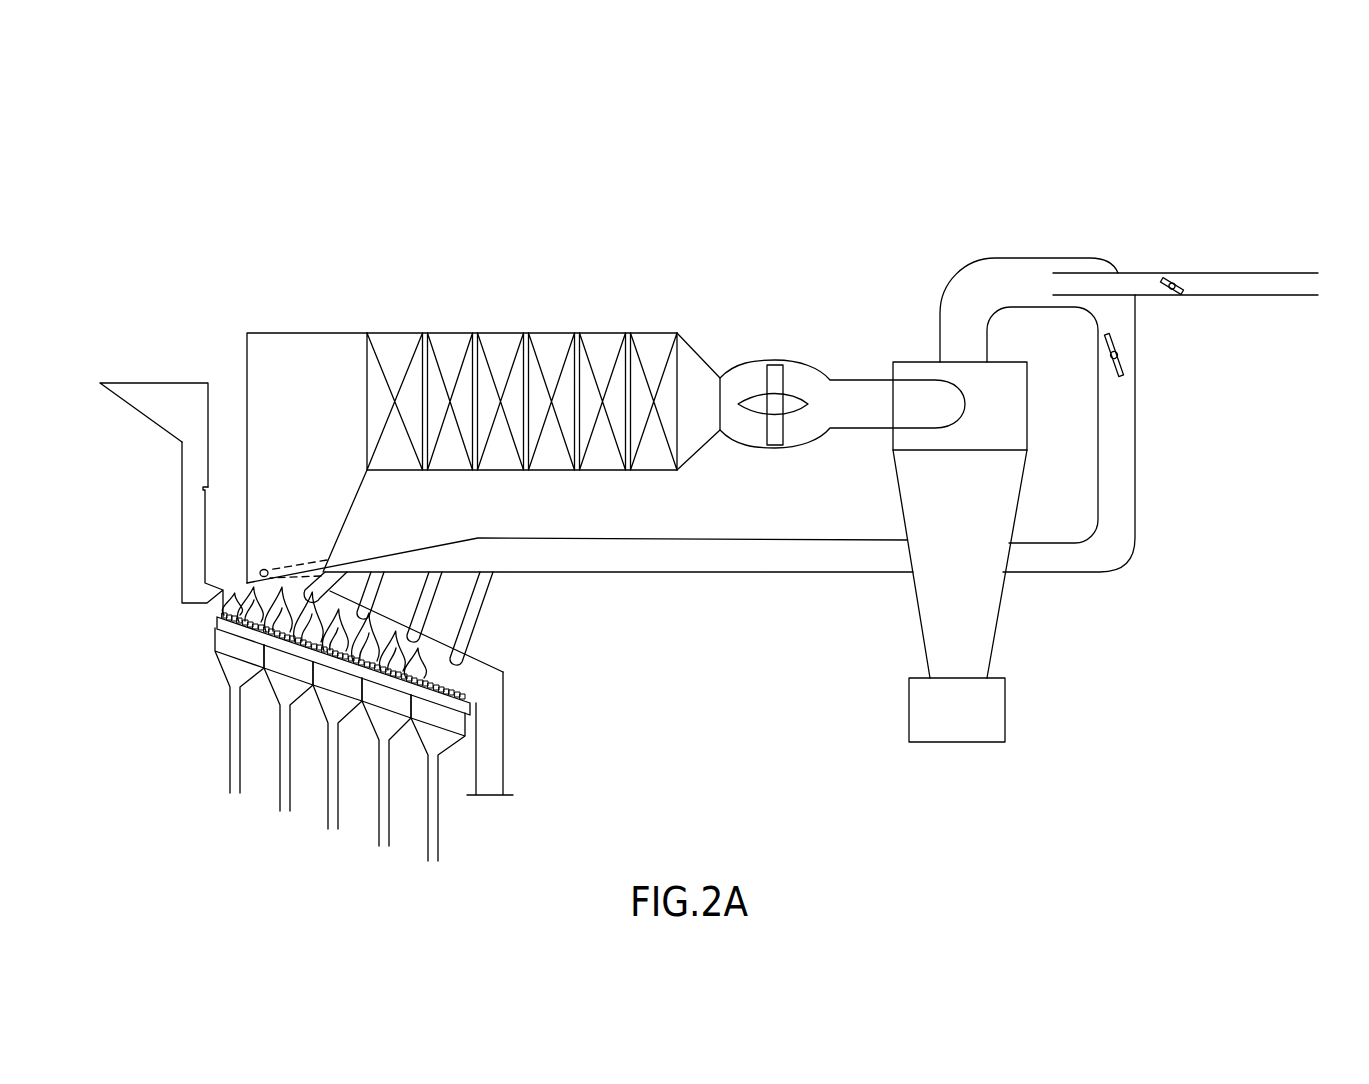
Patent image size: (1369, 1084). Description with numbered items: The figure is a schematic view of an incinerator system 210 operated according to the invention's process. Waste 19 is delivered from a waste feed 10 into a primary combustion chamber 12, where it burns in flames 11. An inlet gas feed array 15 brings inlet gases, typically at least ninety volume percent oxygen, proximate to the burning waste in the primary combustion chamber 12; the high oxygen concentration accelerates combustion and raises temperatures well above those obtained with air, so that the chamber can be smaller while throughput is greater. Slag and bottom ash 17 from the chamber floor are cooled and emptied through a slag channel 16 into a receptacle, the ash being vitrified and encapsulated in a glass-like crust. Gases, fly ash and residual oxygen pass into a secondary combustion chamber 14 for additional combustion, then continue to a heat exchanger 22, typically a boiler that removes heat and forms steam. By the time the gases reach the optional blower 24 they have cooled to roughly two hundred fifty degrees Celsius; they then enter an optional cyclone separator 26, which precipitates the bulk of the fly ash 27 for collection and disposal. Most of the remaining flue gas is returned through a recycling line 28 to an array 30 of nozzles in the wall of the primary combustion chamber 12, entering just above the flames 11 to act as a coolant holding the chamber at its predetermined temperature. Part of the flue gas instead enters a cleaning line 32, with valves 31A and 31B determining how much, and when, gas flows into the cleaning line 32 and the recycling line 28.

The incinerator system 210 is at (990, 137).
The waste feed 10 is at (148, 395).
The waste 19 is at (195, 560).
The primary combustion chamber 12 is at (247, 586).
The secondary combustion chamber 14 is at (304, 344).
The heat exchanger 22 is at (607, 333).
The blower 24 is at (812, 367).
The cyclone separator 26 is at (998, 605).
The fly ash 27 is at (1006, 712).
The recycling line 28 is at (1136, 440).
The cleaning line 32 is at (1280, 273).
The valve 31A is at (1123, 355).
The valve 31B is at (1168, 280).
The array of nozzles 30 is at (458, 602).
The flames 11 is at (480, 671).
The bottom ash 17 is at (466, 690).
The slag channel 16 is at (503, 752).
The inlet gas feed array 15 is at (252, 688).